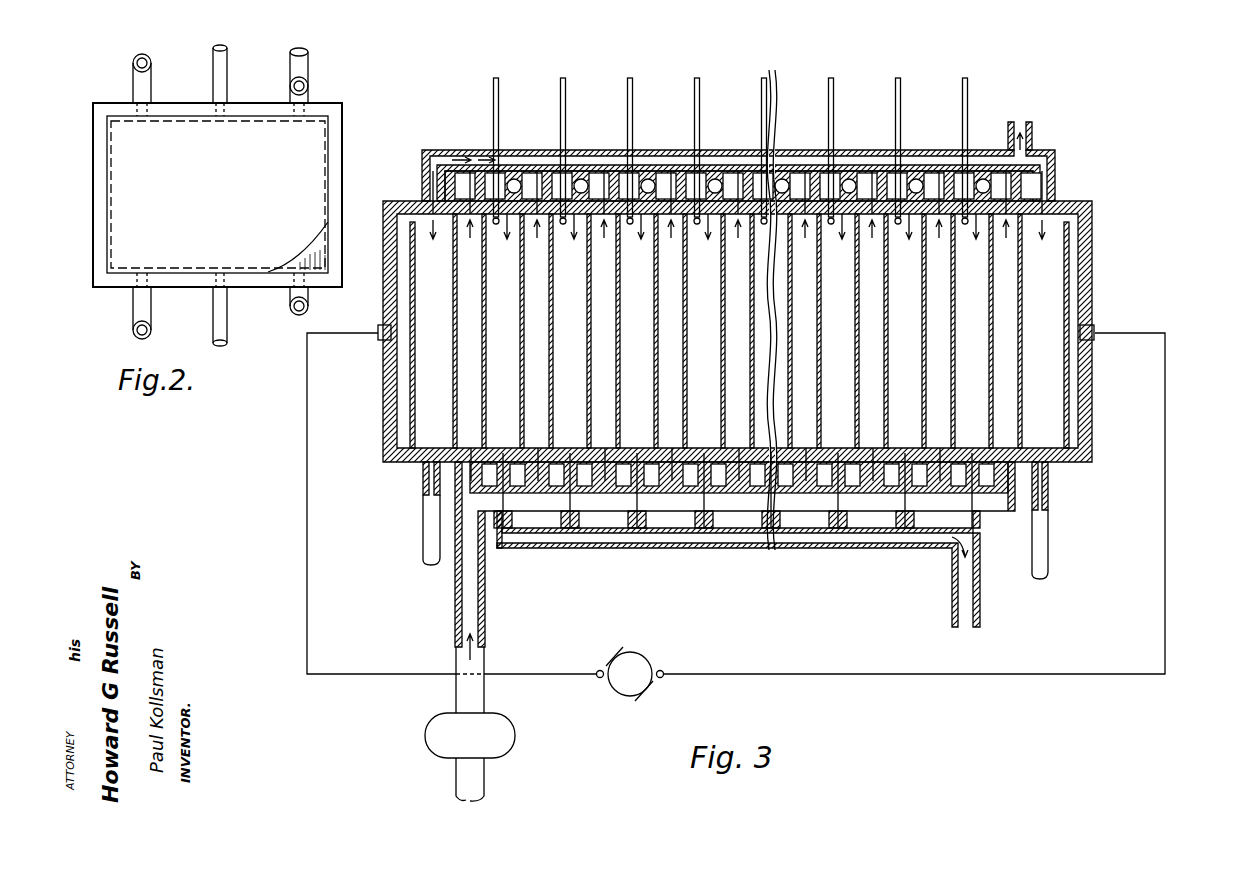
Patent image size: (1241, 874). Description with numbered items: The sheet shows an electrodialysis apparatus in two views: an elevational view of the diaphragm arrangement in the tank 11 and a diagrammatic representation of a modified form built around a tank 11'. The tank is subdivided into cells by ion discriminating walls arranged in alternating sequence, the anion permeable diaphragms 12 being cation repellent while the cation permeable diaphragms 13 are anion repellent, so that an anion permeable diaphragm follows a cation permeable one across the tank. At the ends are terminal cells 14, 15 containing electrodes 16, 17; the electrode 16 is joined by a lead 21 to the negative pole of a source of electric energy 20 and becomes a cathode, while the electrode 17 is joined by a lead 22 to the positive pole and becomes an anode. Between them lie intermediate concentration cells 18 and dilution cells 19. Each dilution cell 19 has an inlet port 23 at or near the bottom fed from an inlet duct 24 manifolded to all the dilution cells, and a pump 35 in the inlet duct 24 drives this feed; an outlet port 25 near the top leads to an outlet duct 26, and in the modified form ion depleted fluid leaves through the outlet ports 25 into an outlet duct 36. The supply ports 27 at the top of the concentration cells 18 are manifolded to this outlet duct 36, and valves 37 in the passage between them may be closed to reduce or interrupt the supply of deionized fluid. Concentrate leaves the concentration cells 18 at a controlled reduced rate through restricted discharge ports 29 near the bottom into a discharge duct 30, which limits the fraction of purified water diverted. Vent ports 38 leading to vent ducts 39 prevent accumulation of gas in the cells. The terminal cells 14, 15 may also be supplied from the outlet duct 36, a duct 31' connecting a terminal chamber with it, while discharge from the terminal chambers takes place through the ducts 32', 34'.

In FIG. 2, the tank 11 is at (202, 203).
In FIG. 2, the cation permeable diaphragm 13 is at (275, 183).
In FIG. 3, the cation permeable diaphragm 13 is at (453, 362).
In FIG. 2, the electrode 17 is at (318, 247).
In FIG. 3, the electrode 17 is at (1069, 282).
In FIG. 2, the inlet duct 24 is at (308, 306).
In FIG. 3, the inlet duct 24 is at (477, 605).
In FIG. 2, the outlet duct 26 is at (308, 72).
In FIG. 2, the discharge duct 30 is at (133, 336).
In FIG. 3, the discharge duct 30 is at (748, 548).
In FIG. 3, the tank 11' is at (718, 335).
In FIG. 3, the anion permeable diaphragm 12 is at (483, 345).
In FIG. 3, the terminal cell 14 is at (1049, 328).
In FIG. 3, the terminal cell 15 is at (432, 254).
In FIG. 3, the electrode 16 is at (408, 278).
In FIG. 3, the concentration cell 18 is at (510, 342).
In FIG. 3, the dilution cell 19 is at (478, 319).
In FIG. 3, the source of electric energy 20 is at (648, 661).
In FIG. 3, the lead 21 is at (307, 398).
In FIG. 3, the lead 22 is at (1165, 518).
In FIG. 3, the inlet port 23 is at (471, 448).
In FIG. 3, the outlet port 25 is at (733, 216).
In FIG. 3, the supply port 27 is at (512, 230).
In FIG. 3, the restricted discharge port 29 is at (503, 462).
In FIG. 3, the duct 31' is at (758, 175).
In FIG. 3, the duct 32' is at (1059, 520).
In FIG. 3, the duct 34' is at (410, 513).
In FIG. 3, the pump 35 is at (515, 745).
In FIG. 3, the outlet duct 36 is at (1018, 122).
In FIG. 3, the valve 37 is at (517, 178).
In FIG. 3, the vent port 38 is at (494, 224).
In FIG. 3, the vent duct 39 is at (494, 98).